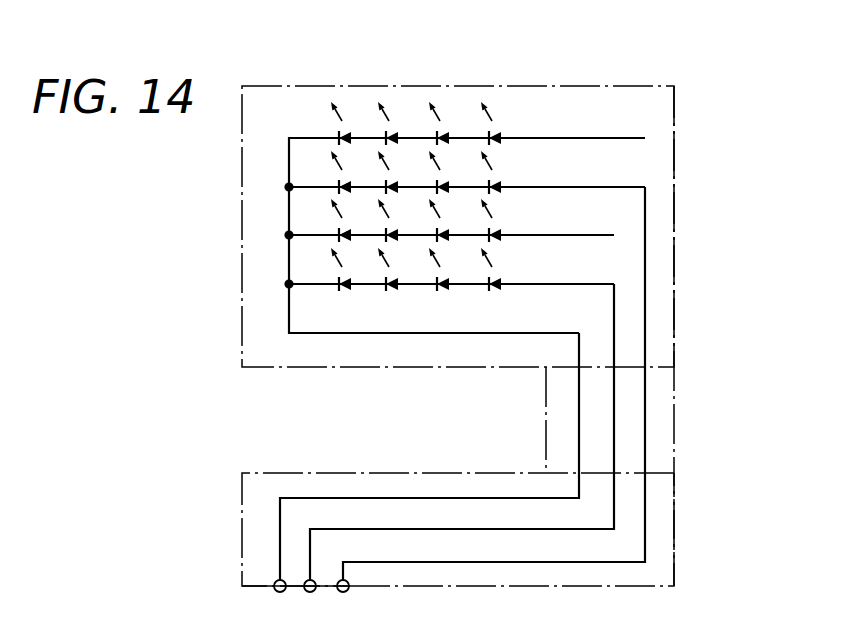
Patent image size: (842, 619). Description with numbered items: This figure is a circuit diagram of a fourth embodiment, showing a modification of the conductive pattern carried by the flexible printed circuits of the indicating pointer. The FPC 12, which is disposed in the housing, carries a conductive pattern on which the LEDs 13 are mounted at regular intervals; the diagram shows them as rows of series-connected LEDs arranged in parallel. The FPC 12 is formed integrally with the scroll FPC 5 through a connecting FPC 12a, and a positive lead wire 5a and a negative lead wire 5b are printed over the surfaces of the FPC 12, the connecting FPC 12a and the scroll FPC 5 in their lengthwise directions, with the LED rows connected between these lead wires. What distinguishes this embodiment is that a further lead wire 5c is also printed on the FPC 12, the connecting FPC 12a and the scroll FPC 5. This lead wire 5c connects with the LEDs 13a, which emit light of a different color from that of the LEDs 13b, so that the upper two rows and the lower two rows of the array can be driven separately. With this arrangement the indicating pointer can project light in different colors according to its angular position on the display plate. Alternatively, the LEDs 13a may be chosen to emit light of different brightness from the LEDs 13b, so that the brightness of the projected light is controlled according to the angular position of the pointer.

The scroll FPC 5 is at (676, 551).
The positive lead wire 5a is at (376, 498).
The negative lead wire 5b is at (412, 529).
The lead wire 5c is at (449, 562).
The FPC 12 is at (675, 107).
The connecting FPC 12a is at (676, 397).
The LEDs 13 is at (411, 179).
The LEDs 13a is at (280, 125).
The LEDs 13b is at (280, 220).